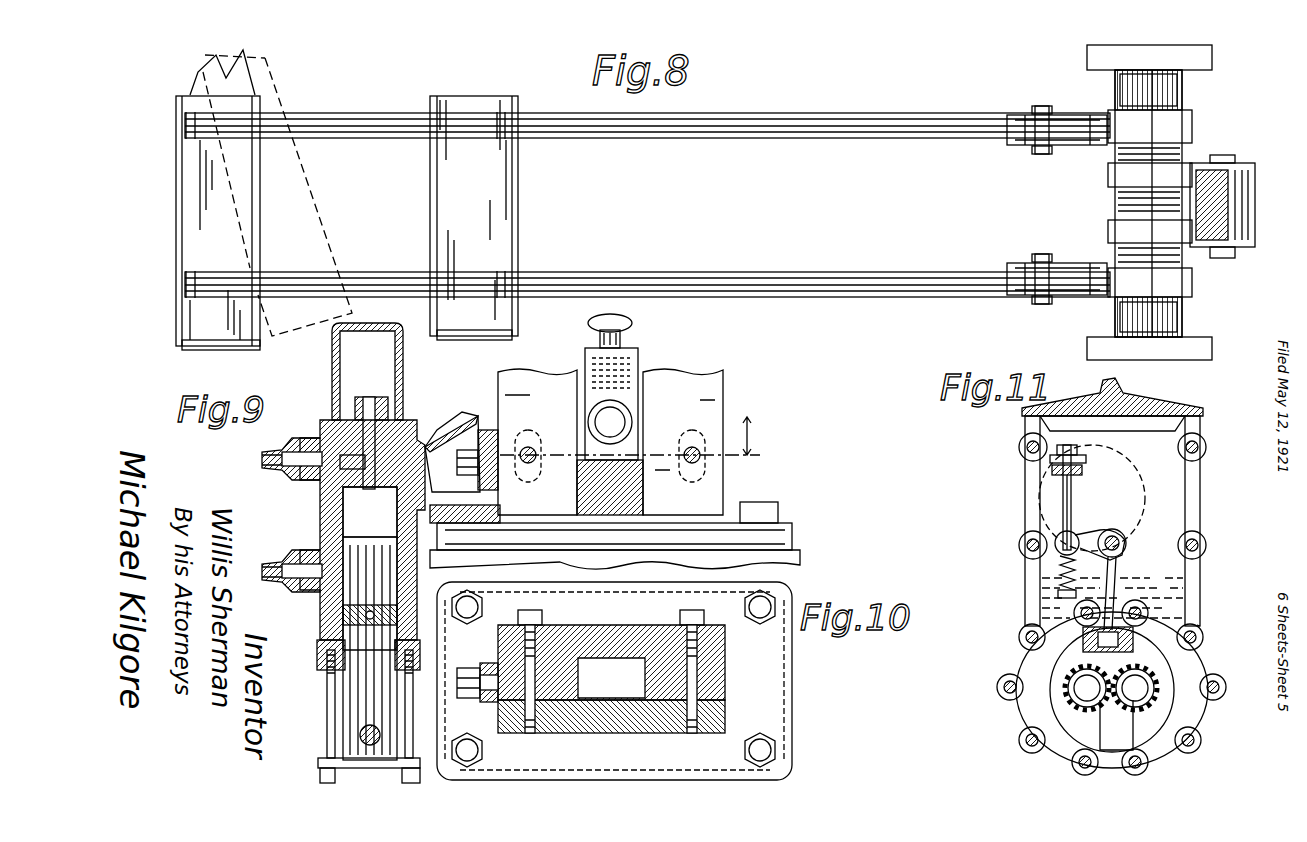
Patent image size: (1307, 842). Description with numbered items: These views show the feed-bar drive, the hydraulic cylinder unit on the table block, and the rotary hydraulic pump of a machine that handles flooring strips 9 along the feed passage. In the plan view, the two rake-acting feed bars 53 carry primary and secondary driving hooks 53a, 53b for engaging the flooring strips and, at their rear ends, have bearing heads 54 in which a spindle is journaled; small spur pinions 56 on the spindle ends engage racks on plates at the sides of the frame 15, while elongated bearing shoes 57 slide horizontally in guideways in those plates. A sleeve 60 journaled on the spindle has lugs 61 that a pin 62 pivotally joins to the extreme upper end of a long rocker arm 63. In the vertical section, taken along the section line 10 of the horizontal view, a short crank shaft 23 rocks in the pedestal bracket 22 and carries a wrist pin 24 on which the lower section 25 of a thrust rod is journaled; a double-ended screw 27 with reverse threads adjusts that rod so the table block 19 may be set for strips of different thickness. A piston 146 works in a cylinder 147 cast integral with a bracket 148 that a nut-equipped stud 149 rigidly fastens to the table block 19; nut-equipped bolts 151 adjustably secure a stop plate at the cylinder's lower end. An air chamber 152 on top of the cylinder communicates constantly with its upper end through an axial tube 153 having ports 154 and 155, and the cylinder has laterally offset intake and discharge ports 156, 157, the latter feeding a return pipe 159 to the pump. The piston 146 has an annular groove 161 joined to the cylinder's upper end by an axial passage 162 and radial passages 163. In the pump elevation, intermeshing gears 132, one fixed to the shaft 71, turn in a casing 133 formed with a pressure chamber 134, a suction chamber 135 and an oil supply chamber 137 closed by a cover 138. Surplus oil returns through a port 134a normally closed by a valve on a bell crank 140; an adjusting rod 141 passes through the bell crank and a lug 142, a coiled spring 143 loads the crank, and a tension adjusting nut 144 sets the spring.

In FIG. 8, the frame plate 9 is at (448, 184).
In FIG. 8, the feed bars 53 is at (570, 276).
In FIG. 8, the primary driving hooks 53a is at (253, 272).
In FIG. 8, the secondary driving hooks 53b is at (512, 272).
In FIG. 8, the bearing heads 54 is at (1182, 104).
In FIG. 8, the spur pinions 56 is at (1182, 85).
In FIG. 8, the bearing shoes 57 is at (1098, 60).
In FIG. 8, the sleeve 60 is at (1135, 203).
In FIG. 8, the lugs 61 is at (1253, 183).
In FIG. 8, the pin 62 is at (1228, 257).
In FIG. 8, the rocker arm 63 is at (1218, 205).
In FIG. 9, the air chamber 152 is at (382, 366).
In FIG. 9, the port 154 is at (354, 413).
In FIG. 9, the axial tube 153 is at (369, 432).
In FIG. 9, the axial passage 162 is at (372, 542).
In FIG. 9, the intake port 156 is at (313, 456).
In FIG. 9, the port 155 is at (342, 466).
In FIG. 9, the discharge port 157 is at (314, 552).
In FIG. 9, the piston 146 is at (362, 711).
In FIG. 9, the cylinder 147 is at (345, 621).
In FIG. 9, the annular groove 161 is at (378, 621).
In FIG. 9, the radial passages 163 is at (340, 636).
In FIG. 9, the nut-equipped bolts 151 is at (400, 716).
In FIG. 9, the bracket 148 is at (462, 412).
In FIG. 10, the bracket 148 is at (488, 664).
In FIG. 9, the nut-equipped stud 149 is at (460, 471).
In FIG. 10, the nut-equipped stud 149 is at (468, 699).
In FIG. 9, the axis 10 is at (466, 456).
In FIG. 9, the table block 19 is at (535, 381).
In FIG. 10, the table block 19 is at (584, 638).
In FIG. 9, the lower section of thrust rod 25 is at (632, 358).
In FIG. 9, the double-ended screw 27 is at (630, 324).
In FIG. 9, the wrist pin 24 is at (628, 408).
In FIG. 9, the crank shaft 23 is at (622, 425).
In FIG. 9, the pedestal bracket 22 is at (733, 540).
In FIG. 10, the pedestal bracket 22 is at (726, 720).
In FIG. 9, the frame 15 is at (788, 556).
In FIG. 11, the cover 138 is at (1185, 412).
In FIG. 11, the oil supply chamber 137 is at (1170, 528).
In FIG. 11, the tension adjusting nut 144 is at (1100, 446).
In FIG. 11, the lug 142 is at (1086, 474).
In FIG. 11, the adjusting rod 141 is at (1060, 504).
In FIG. 11, the bell crank 140 is at (1104, 540).
In FIG. 11, the coiled spring 143 is at (1056, 576).
In FIG. 11, the return pipe 159 is at (1180, 592).
In FIG. 11, the casing 133 is at (1196, 616).
In FIG. 11, the suction chamber 135 is at (1186, 673).
In FIG. 11, the port 134a is at (1084, 641).
In FIG. 11, the pressure chamber 134 is at (1042, 701).
In FIG. 11, the intermeshing gears 132 is at (1160, 702).
In FIG. 11, the shaft 71 is at (1086, 690).